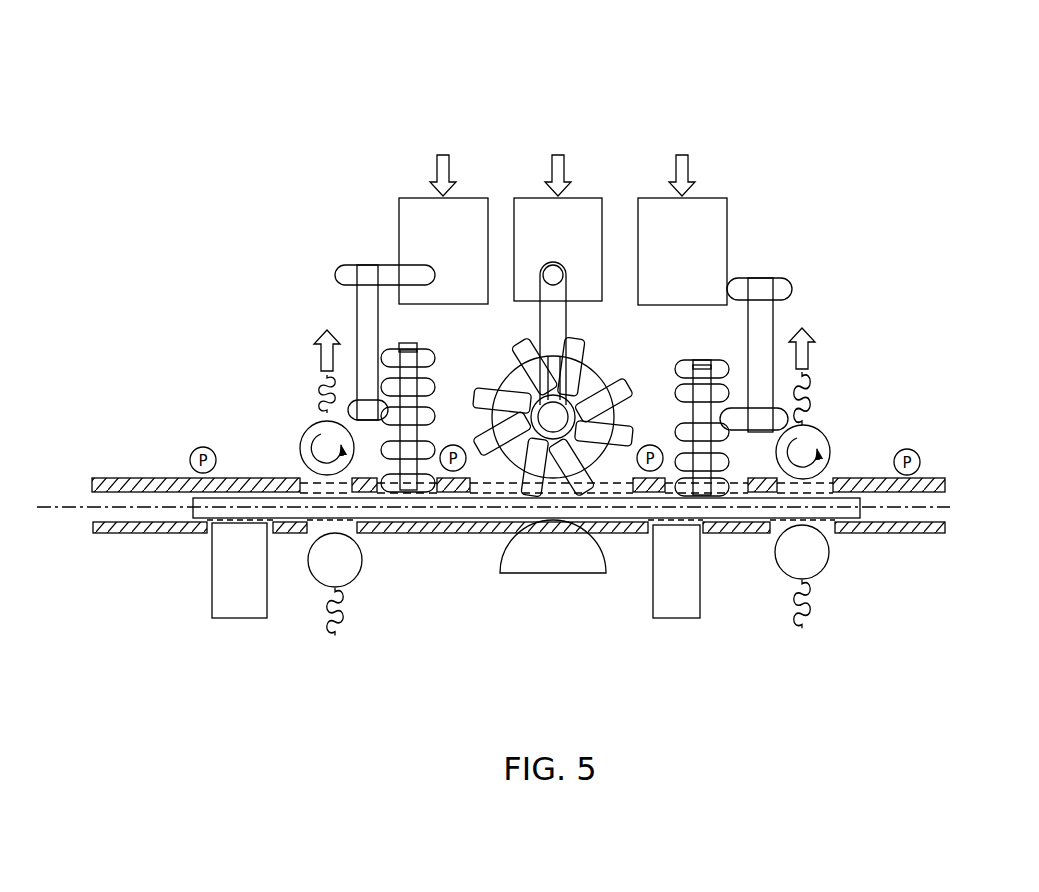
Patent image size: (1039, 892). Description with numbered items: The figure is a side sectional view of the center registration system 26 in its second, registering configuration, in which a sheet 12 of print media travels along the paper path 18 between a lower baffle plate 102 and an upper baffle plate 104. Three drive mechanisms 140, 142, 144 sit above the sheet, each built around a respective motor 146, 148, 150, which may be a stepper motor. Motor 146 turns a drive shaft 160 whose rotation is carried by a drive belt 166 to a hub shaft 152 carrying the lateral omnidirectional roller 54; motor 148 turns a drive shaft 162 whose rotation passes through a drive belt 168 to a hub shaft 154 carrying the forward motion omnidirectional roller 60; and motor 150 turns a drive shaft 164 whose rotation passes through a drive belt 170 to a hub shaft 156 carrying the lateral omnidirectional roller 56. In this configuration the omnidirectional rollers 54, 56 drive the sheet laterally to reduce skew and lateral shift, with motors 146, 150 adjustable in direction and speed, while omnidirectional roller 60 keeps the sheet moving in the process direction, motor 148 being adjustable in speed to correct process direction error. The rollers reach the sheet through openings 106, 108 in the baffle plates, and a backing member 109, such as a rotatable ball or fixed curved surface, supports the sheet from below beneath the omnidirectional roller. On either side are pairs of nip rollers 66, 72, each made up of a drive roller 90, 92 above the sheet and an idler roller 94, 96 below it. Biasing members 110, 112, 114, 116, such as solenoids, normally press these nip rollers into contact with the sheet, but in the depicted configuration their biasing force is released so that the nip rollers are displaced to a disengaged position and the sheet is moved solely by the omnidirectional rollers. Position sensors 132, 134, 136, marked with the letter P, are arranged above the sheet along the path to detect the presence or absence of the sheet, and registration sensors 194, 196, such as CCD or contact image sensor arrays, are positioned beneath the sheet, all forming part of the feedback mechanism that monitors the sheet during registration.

The center registration system 26 is at (265, 168).
The drive mechanism 140 is at (362, 233).
The drive mechanism 142 is at (512, 167).
The drive mechanism 144 is at (738, 242).
The motor 146 is at (400, 215).
The motor 148 is at (583, 220).
The motor 150 is at (708, 220).
The drive shaft 160 is at (335, 267).
The drive belt 166 is at (355, 295).
The hub shaft 152 is at (384, 393).
The omnidirectional roller 54 is at (432, 350).
The biasing member 110 is at (322, 392).
The drive roller 90 is at (308, 432).
The pair of nip rollers 66 is at (287, 397).
The pressure sensor 132 is at (203, 445).
The drive shaft 162 is at (548, 266).
The drive belt 168 is at (538, 344).
The omnidirectional roller 60 is at (542, 402).
The hub shaft 154 is at (546, 408).
The pressure sensor 134 is at (453, 442).
The pressure sensor 136 is at (648, 442).
The omnidirectional roller 56 is at (683, 352).
The drive shaft 164 is at (736, 280).
The drive belt 170 is at (750, 337).
The hub shaft 156 is at (776, 414).
The biasing member 114 is at (804, 400).
The drive roller 92 is at (830, 448).
The pair of nip rollers 72 is at (831, 386).
The upper baffle plate 104 is at (118, 476).
The opening 106 is at (300, 478).
The lower baffle plate 102 is at (150, 537).
The opening 108 is at (583, 498).
The sheet 12 is at (200, 495).
The paper path 18 is at (78, 500).
The registration sensor 194 is at (240, 621).
The registration sensor 196 is at (678, 621).
The idler roller 94 is at (358, 578).
The biasing member 112 is at (340, 633).
The idler roller 96 is at (828, 556).
The biasing member 116 is at (808, 628).
The backing member 109 is at (553, 576).